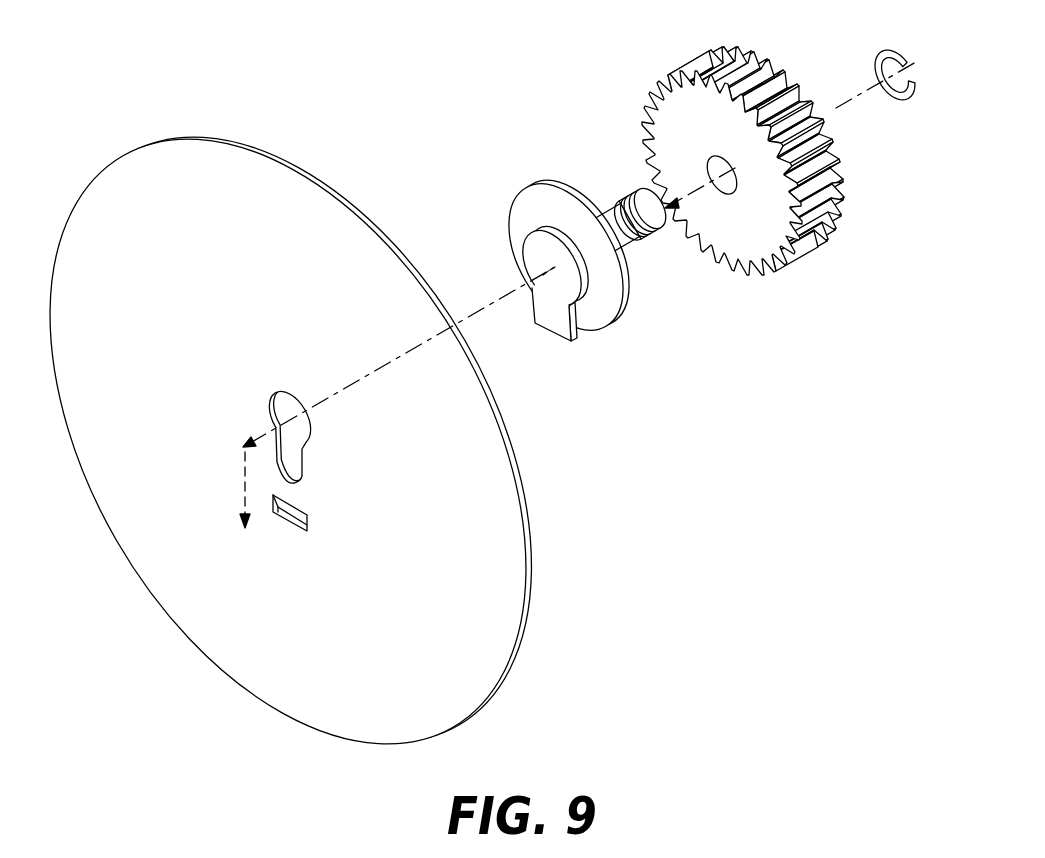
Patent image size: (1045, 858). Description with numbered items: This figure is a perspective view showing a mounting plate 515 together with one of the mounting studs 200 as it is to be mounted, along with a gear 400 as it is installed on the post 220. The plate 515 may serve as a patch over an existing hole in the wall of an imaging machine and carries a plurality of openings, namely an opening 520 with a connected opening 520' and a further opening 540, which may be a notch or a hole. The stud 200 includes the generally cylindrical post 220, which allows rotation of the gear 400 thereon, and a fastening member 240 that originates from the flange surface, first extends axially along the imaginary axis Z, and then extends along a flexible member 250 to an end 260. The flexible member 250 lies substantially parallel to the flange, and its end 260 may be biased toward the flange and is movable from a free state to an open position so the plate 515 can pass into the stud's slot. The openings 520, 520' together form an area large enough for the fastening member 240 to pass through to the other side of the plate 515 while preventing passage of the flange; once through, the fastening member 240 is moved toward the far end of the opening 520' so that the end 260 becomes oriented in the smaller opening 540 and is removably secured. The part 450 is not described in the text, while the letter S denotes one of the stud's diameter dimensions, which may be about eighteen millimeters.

The mounting plate 515 is at (320, 179).
The opening 520 is at (316, 433).
The connected opening 520' is at (324, 456).
The opening 540 is at (301, 512).
The mounting stud 200 is at (578, 255).
The post 220 is at (618, 210).
The fastening member 240 is at (542, 292).
The flexible member 250 is at (562, 325).
The end 260 is at (608, 324).
The gear 400 is at (752, 45).
The retaining ring 450 is at (893, 49).
The diameter S is at (280, 392).
The imaginary axis z Z is at (916, 62).